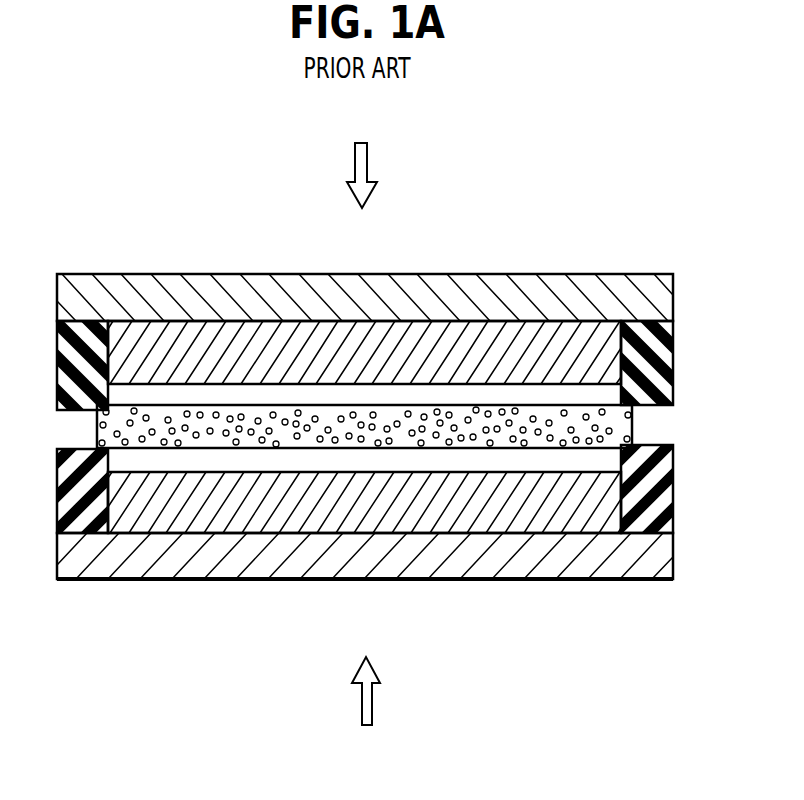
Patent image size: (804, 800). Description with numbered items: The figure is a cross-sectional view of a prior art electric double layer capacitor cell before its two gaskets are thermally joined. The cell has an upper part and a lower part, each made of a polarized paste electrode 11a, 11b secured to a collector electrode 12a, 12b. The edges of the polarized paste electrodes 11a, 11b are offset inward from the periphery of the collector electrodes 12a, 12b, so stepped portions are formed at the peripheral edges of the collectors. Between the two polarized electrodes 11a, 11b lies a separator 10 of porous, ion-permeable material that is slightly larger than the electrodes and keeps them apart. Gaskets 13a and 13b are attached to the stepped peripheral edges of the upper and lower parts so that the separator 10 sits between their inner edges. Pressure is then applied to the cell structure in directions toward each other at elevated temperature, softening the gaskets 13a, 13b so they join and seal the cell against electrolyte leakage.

The separator 10 is at (195, 420).
The polarized paste electrode 11a is at (372, 367).
The polarized paste electrode 11b is at (362, 493).
The collector electrode 12a is at (570, 278).
The collector electrode 12b is at (565, 573).
The gasket 13a is at (668, 350).
The gasket 13b is at (668, 490).